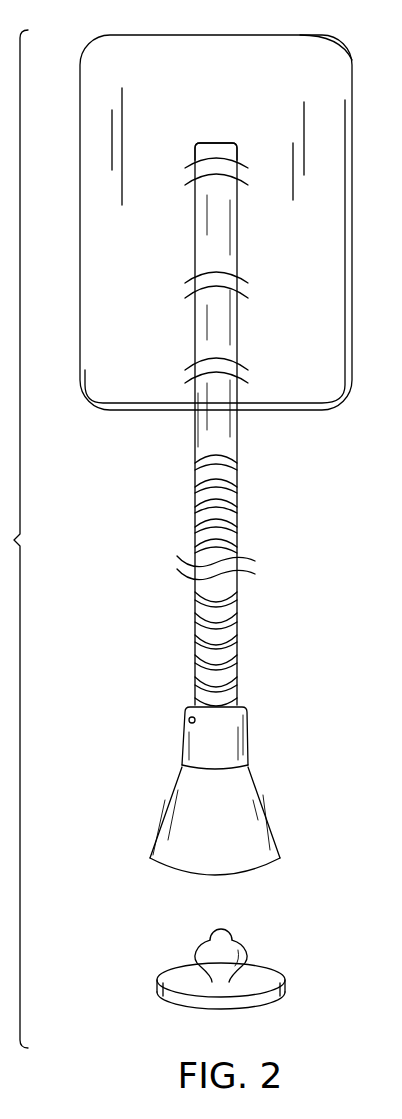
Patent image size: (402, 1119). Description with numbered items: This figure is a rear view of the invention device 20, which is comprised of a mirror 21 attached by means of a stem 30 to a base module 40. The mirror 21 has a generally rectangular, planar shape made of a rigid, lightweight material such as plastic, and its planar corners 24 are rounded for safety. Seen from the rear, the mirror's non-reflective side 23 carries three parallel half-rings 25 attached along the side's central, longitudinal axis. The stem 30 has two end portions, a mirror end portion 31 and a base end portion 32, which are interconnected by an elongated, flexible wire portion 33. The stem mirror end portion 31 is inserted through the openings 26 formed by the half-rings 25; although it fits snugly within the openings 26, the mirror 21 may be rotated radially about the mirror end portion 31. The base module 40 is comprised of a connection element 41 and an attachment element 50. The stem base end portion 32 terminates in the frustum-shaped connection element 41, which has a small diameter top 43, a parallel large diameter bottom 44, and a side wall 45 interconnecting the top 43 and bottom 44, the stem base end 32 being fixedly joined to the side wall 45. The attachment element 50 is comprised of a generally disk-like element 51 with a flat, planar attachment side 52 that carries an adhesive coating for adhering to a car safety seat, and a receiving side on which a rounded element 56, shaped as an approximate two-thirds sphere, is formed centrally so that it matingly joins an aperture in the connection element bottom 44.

The invention device 20 is at (100, 470).
The mirror 21 is at (80, 87).
The non-reflective side 23 is at (230, 75).
The planar corners 24 is at (337, 40).
The half-rings 25 is at (243, 166).
The openings 26 is at (216, 175).
The mirror end portion 31 is at (195, 320).
The wire portion 33 is at (230, 493).
The stem 30 is at (237, 627).
The base end portion 32 is at (237, 685).
The base module 40 is at (115, 807).
The connection element 41 is at (268, 813).
The small diameter top 43 is at (225, 766).
The large diameter bottom 44 is at (235, 876).
The side wall 45 is at (225, 824).
The attachment element 50 is at (228, 984).
The disk-like element 51 is at (157, 988).
The attachment side 52 is at (255, 1009).
The rounded element 56 is at (238, 958).